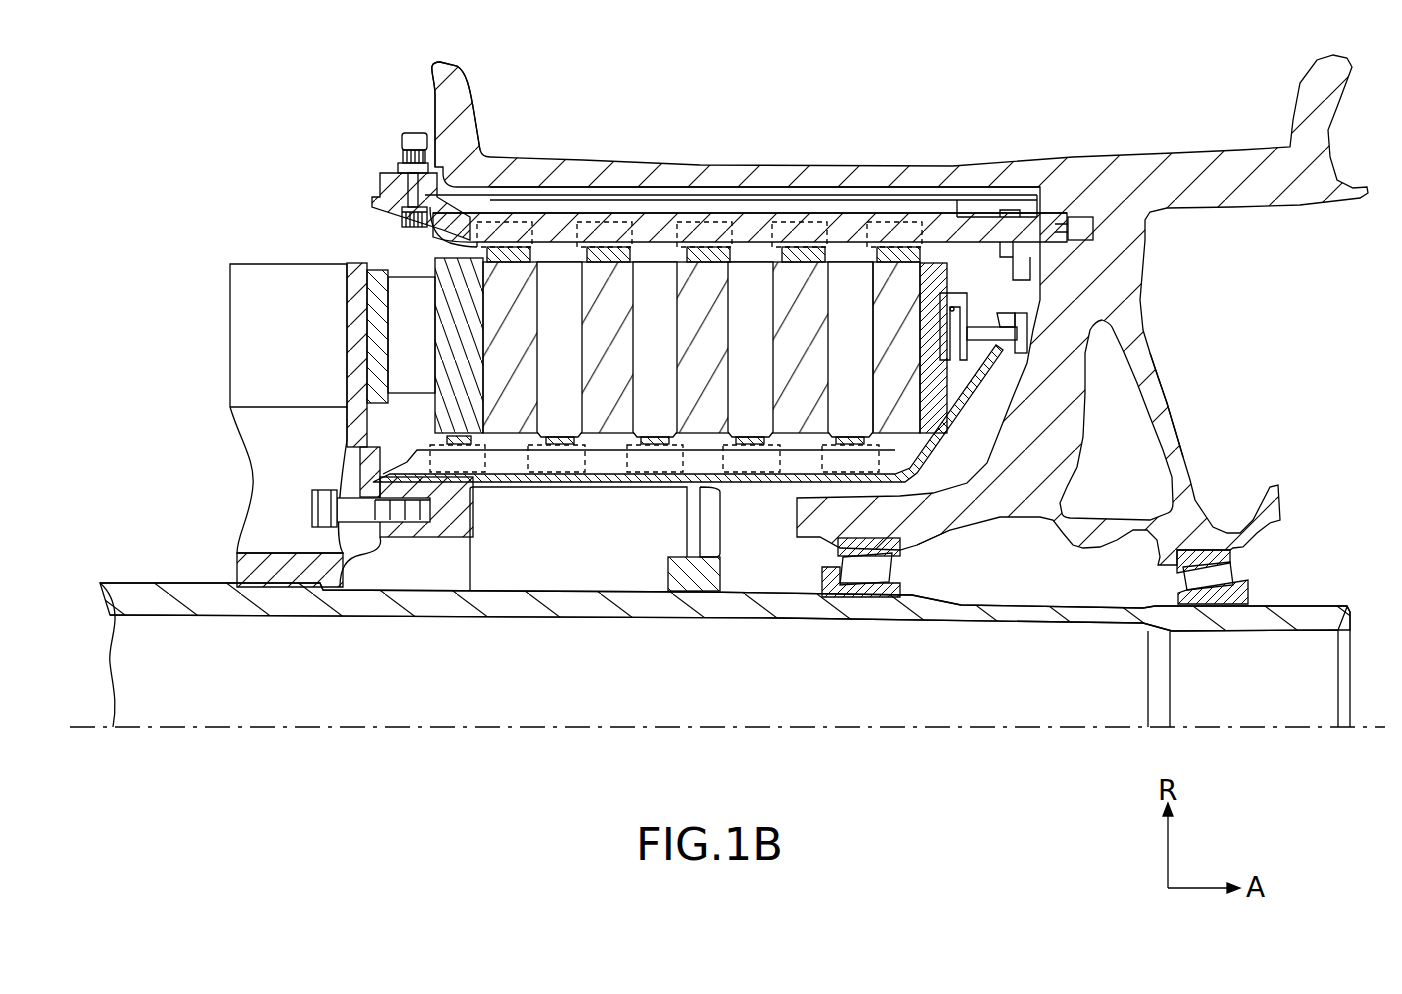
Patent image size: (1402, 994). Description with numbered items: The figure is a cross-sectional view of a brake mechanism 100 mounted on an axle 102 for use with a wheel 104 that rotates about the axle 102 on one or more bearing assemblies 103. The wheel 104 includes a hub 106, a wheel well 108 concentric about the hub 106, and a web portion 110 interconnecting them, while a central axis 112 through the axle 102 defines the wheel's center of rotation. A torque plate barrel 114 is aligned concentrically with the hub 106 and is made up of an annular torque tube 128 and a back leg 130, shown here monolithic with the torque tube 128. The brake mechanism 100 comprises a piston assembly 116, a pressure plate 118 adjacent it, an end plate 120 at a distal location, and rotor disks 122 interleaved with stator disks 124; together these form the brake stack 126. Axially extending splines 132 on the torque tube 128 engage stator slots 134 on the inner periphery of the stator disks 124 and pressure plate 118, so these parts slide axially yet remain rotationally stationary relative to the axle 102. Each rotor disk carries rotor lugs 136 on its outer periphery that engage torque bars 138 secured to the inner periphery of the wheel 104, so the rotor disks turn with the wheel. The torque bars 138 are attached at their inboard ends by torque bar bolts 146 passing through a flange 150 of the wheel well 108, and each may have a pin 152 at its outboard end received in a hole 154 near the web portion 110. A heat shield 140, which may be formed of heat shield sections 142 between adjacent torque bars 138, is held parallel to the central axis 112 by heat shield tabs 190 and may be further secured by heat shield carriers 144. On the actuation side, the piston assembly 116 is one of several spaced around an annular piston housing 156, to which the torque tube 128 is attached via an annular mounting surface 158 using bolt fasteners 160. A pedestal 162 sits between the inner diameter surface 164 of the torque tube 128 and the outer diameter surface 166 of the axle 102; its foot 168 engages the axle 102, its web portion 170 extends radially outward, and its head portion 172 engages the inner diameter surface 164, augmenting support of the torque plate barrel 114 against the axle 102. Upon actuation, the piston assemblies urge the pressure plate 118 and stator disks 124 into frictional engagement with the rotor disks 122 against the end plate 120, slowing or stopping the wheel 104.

The brake mechanism 100 is at (233, 130).
The axle 102 is at (1017, 616).
The bearing assemblies 103 is at (1220, 575).
The wheel 104 is at (1163, 320).
The hub 106 is at (1000, 523).
The wheel well 108 is at (1037, 167).
The web portion 110 is at (1167, 397).
The central axis 112 is at (970, 731).
The torque plate barrel 114 is at (533, 493).
The piston assembly 116 is at (607, 276).
The pressure plate 118 is at (437, 262).
The end plate 120 is at (944, 276).
The rotor disks 122 is at (510, 267).
The stator disks 124 is at (653, 263).
The brake stack 126 is at (813, 270).
The torque tube 128 is at (492, 492).
The back leg 130 is at (960, 407).
The splines 132 is at (412, 467).
The stator slots 134 is at (827, 467).
The rotor lugs 136 is at (533, 237).
The torque bars 138 is at (953, 230).
The heat shield 140 is at (696, 200).
The heat shield sections 142 is at (806, 233).
The heat shield carriers 144 is at (458, 210).
The torque bar bolts 146 is at (413, 133).
The flange 150 is at (387, 173).
The pin 152 is at (1047, 217).
The hole 154 is at (1080, 217).
The annular piston housing 156 is at (230, 267).
The annular mounting surface 158 is at (423, 537).
The bolt fasteners 160 is at (317, 508).
The pedestal 162 is at (680, 517).
The inner diameter surface 164 is at (577, 487).
The outer diameter surface 166 is at (730, 593).
The foot 168 is at (723, 557).
The web portion 170 is at (687, 540).
The head portion 172 is at (687, 488).
The heat shield tabs 190 is at (1030, 248).